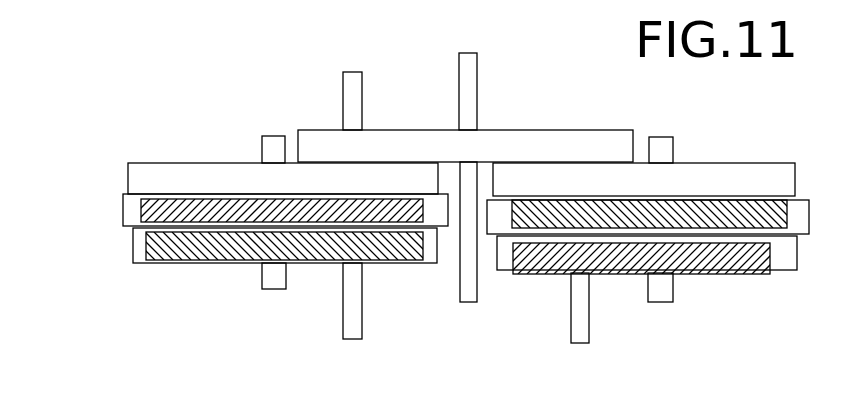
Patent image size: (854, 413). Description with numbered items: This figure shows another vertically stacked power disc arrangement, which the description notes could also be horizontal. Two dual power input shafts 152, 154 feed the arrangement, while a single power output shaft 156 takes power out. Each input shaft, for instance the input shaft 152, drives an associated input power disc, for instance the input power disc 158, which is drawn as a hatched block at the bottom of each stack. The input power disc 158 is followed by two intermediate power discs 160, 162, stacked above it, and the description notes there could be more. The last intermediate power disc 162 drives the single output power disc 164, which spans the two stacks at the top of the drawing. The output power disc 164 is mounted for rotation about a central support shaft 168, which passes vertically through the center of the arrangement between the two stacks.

The power input shaft 152 is at (362, 315).
The power input shaft 154 is at (589, 320).
The power output shaft 156 is at (343, 90).
The input power disc 158 is at (200, 263).
The intermediate power disc 160 is at (127, 208).
The intermediate power disc 162 is at (138, 173).
The output power disc 164 is at (620, 137).
The central support shaft 168 is at (477, 83).